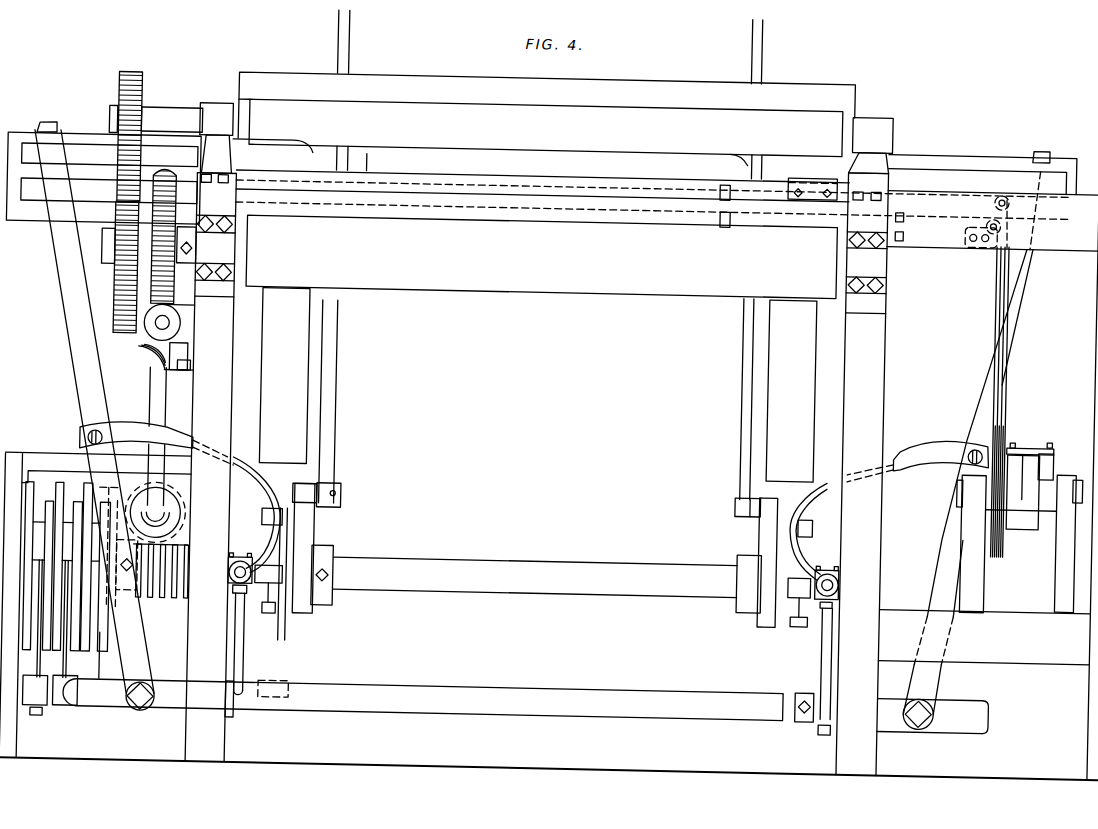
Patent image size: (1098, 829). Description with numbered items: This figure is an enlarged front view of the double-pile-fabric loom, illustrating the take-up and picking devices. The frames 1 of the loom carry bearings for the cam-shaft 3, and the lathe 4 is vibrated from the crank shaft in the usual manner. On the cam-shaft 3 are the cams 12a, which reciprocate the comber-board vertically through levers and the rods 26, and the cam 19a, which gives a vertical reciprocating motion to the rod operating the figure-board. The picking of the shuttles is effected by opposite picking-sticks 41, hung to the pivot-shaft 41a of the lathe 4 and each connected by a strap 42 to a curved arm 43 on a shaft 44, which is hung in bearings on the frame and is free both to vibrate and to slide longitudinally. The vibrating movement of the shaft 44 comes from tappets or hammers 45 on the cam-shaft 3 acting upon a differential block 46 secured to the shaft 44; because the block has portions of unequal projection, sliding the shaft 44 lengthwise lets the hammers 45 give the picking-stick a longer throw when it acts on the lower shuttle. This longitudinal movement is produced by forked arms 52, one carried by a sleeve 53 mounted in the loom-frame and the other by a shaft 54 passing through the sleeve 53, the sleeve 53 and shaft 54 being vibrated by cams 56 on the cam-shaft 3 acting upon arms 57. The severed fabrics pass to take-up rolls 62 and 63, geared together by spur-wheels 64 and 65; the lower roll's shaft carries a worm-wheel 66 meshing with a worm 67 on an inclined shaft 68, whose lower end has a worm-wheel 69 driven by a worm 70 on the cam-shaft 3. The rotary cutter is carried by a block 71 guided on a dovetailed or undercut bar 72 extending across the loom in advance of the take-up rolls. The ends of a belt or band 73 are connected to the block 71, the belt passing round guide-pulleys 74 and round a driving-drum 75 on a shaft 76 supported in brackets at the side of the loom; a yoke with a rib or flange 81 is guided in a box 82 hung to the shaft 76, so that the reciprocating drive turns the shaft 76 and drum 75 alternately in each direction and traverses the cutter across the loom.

The frames 1 is at (545, 439).
The cam-shaft 3 is at (536, 579).
The lathe 4 is at (537, 403).
The cams 12a is at (318, 526).
The cam 19a is at (105, 655).
The rods 26 is at (752, 386).
The picking-sticks 41 is at (536, 427).
The pivot-shaft 41a is at (933, 716).
The strap 42 is at (534, 444).
The curved arm 43 is at (280, 489).
The shaft 44 is at (252, 556).
The tappets or hammers 45 is at (273, 511).
The differential block 46 is at (532, 596).
The arms 52 is at (532, 656).
The sleeve 53 is at (438, 703).
The shaft 54 is at (62, 706).
The cams 56 is at (66, 567).
The arms 57 is at (51, 660).
The take-up roll 62 is at (546, 127).
The take-up roll 63 is at (541, 256).
The spur-wheel 64 is at (156, 128).
The spur-wheel 65 is at (121, 293).
The worm-wheel 66 is at (174, 236).
The worm 67 is at (158, 357).
The inclined shaft 68 is at (170, 399).
The worm-wheel 69 is at (155, 512).
The worm 70 is at (160, 581).
The block 71 is at (813, 182).
The dovetailed or undercut bar 72 is at (654, 196).
The belt or band 73 is at (992, 203).
The guide-pulleys 74 is at (1013, 182).
The driving-drum 75 is at (1016, 524).
The shaft 76 is at (968, 468).
The rib or flange 81 is at (1049, 427).
The box 82 is at (1063, 436).